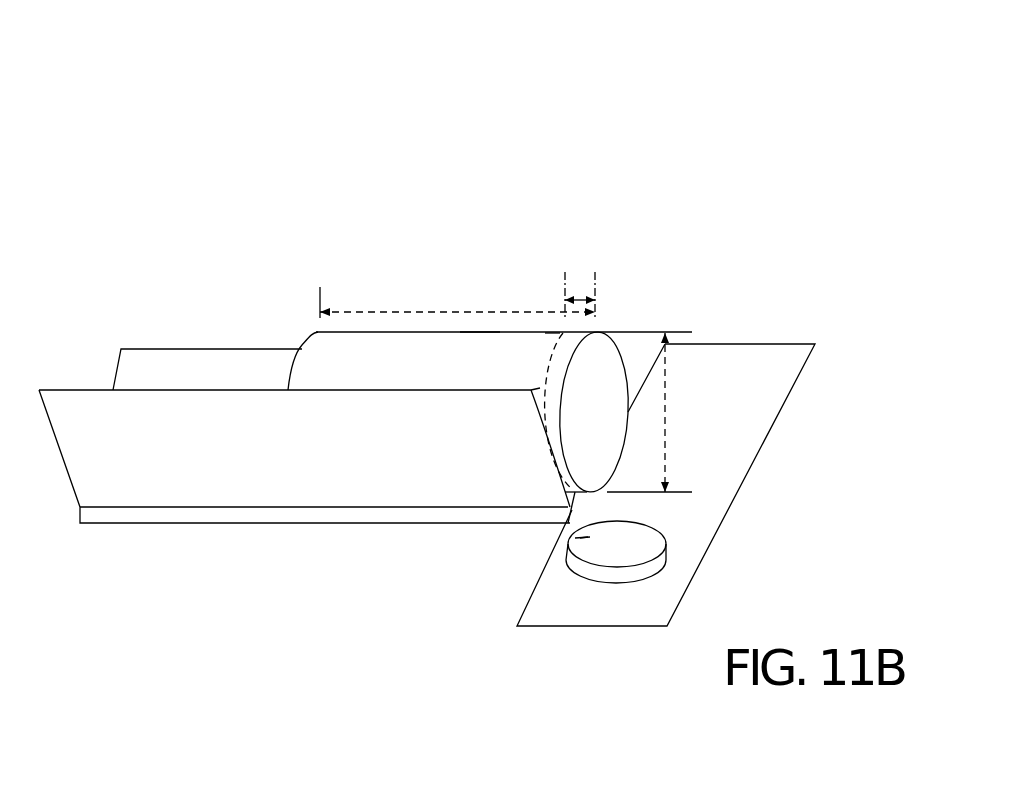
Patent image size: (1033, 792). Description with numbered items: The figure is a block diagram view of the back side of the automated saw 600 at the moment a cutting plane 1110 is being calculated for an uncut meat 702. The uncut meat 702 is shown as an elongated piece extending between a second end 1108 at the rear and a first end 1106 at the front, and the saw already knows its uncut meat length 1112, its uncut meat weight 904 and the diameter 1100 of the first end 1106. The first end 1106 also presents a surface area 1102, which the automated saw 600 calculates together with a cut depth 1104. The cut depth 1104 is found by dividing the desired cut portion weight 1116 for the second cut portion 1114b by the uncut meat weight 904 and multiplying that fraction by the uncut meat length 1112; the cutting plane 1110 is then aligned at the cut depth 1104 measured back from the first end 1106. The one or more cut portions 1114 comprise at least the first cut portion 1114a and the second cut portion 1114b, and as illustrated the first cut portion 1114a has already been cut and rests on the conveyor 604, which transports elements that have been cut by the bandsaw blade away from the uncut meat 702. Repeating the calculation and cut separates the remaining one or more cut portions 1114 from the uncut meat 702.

The automated saw 600 is at (276, 56).
The uncut meat 702 is at (475, 340).
The uncut meat weight 904 is at (418, 378).
The second end 1108 is at (337, 355).
The cutting plane 1110 is at (548, 368).
The second cut portion 1114b is at (557, 445).
The one or more cut portions 1114 is at (587, 538).
The first cut portion 1114a is at (584, 537).
The first end 1106 is at (549, 347).
The surface area 1102 is at (593, 395).
The cut depth 1104 is at (582, 300).
The uncut meat length 1112 is at (457, 312).
The diameter 1100 is at (665, 410).
The conveyor 604 is at (578, 608).
The cut portion weight 1116 is at (635, 561).